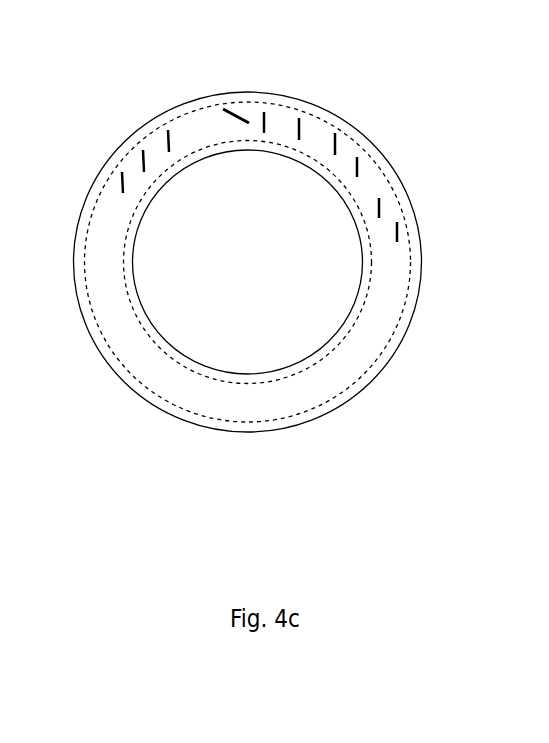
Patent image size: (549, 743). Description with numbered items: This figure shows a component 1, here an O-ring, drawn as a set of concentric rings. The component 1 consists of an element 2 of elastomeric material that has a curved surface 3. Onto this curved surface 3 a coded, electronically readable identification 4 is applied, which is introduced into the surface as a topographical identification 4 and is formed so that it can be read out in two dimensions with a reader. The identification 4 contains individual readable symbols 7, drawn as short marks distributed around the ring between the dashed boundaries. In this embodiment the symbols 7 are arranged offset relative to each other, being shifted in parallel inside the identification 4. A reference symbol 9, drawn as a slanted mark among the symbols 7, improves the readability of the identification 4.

The component 1 is at (88, 463).
The element 2 is at (418, 301).
The curved surface 3 is at (347, 152).
The identification 4 is at (104, 210).
The symbols 7 is at (143, 150).
The reference symbol 9 is at (237, 115).